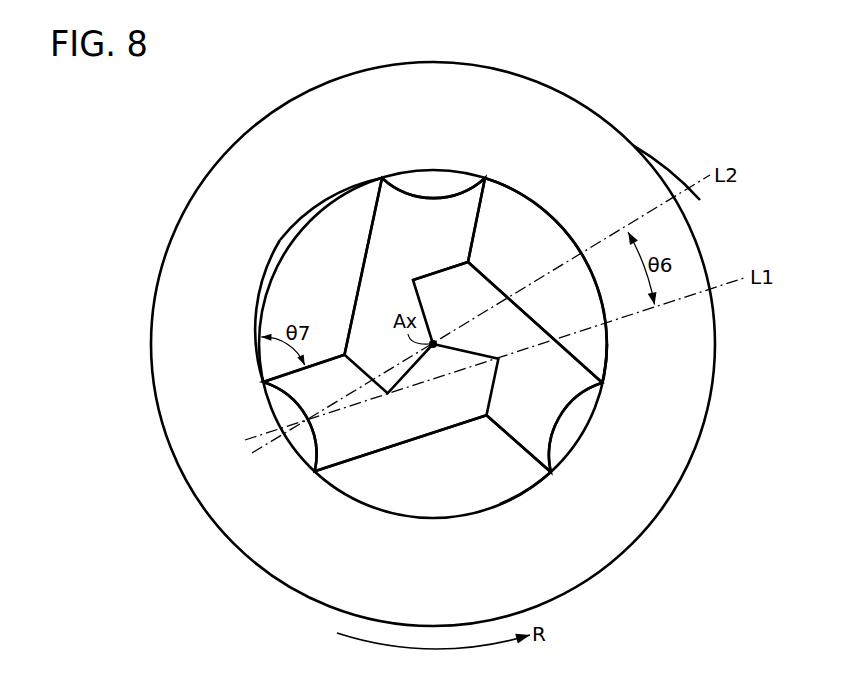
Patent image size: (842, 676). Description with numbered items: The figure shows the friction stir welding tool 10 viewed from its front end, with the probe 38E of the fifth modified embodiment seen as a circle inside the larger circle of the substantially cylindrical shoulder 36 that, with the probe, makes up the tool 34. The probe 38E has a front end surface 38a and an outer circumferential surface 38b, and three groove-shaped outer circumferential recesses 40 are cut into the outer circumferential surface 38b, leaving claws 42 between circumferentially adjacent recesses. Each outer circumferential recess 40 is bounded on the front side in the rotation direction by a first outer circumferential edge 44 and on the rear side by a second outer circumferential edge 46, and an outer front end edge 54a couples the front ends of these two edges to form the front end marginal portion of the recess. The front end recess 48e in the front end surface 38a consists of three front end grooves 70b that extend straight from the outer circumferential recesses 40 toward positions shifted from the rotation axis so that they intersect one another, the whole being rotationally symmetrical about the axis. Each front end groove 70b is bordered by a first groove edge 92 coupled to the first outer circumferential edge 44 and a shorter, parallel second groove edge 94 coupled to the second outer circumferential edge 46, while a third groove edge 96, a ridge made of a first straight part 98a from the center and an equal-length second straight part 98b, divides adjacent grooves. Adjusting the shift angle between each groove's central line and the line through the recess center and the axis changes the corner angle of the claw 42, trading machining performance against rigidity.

The welding tool 10 is at (99, 109).
The tool 34 is at (133, 109).
The shoulder 36 is at (634, 146).
The probe 38E is at (530, 180).
The front end surface 38a is at (325, 228).
The outer circumferential surface 38b is at (268, 287).
The outer circumferential recess 40 is at (302, 443).
The claw 42 is at (260, 358).
The first outer circumferential edge 44 is at (604, 384).
The second outer circumferential edge 46 is at (552, 473).
The front end recess 48e is at (372, 287).
The outer front end edge 54a is at (563, 418).
The front end groove 70b is at (383, 433).
The first groove edge 92 is at (583, 364).
The second groove edge 94 is at (513, 440).
The third groove edge 96 is at (340, 123).
The first straight part 98a is at (416, 297).
The second straight part 98b is at (435, 272).